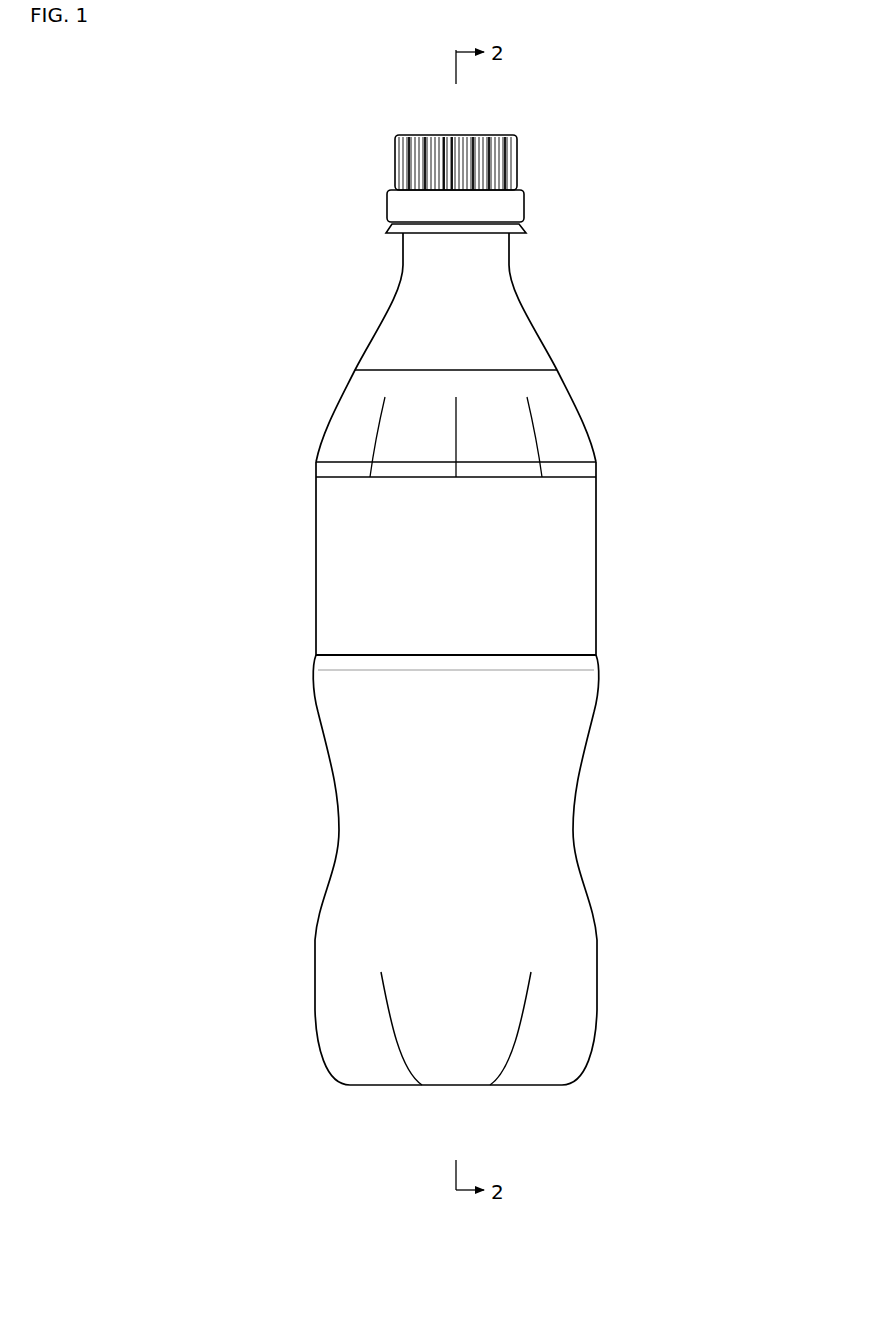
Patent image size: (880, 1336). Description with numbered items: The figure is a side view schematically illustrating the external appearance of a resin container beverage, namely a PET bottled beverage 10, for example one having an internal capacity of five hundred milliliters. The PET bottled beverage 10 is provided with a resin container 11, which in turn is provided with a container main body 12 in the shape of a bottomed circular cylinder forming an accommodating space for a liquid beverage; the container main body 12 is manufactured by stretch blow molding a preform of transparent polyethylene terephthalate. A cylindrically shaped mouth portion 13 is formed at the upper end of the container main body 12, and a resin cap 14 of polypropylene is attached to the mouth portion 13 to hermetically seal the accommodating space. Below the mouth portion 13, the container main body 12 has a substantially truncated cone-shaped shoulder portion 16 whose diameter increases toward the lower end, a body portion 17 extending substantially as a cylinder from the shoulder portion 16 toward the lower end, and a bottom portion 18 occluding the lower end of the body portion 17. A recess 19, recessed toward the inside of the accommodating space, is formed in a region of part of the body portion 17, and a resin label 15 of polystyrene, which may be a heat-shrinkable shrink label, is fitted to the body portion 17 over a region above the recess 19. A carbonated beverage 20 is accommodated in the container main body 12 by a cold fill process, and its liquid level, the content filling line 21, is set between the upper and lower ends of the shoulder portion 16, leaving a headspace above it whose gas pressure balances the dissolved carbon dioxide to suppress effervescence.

The PET bottled beverage 10 is at (643, 126).
The resin container 11 is at (369, 332).
The container main body 12 is at (312, 683).
The mouth portion 13 is at (388, 231).
The cap 14 is at (496, 135).
The label 15 is at (316, 543).
The shoulder portion 16 is at (546, 343).
The body portion 17 is at (600, 680).
The bottom portion 18 is at (523, 1085).
The recess 19 is at (575, 818).
The carbonated beverage 20 is at (553, 411).
The content filling line 21 is at (472, 367).